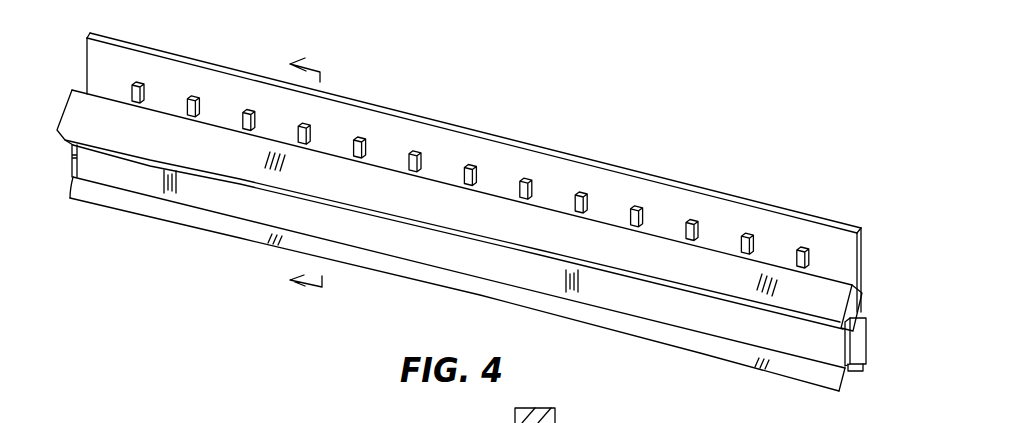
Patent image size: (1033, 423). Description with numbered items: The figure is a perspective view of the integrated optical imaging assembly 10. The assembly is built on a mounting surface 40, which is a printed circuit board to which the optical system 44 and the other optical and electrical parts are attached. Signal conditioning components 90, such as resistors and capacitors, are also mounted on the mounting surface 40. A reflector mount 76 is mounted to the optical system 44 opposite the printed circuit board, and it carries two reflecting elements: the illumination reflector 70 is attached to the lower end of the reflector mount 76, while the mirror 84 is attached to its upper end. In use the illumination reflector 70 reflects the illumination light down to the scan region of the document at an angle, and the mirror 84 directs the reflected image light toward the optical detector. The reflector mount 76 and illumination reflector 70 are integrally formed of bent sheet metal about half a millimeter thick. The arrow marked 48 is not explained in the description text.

The integrated optical imaging assembly 10 is at (647, 120).
The mounting surface 40 is at (188, 60).
The optical system 44 is at (853, 345).
The direction arrow / peg row 48 is at (320, 72).
The illumination reflector 70 is at (843, 384).
The reflector mount 76 is at (471, 265).
The mirror 84 is at (67, 102).
The signal conditioning components 90 is at (821, 261).